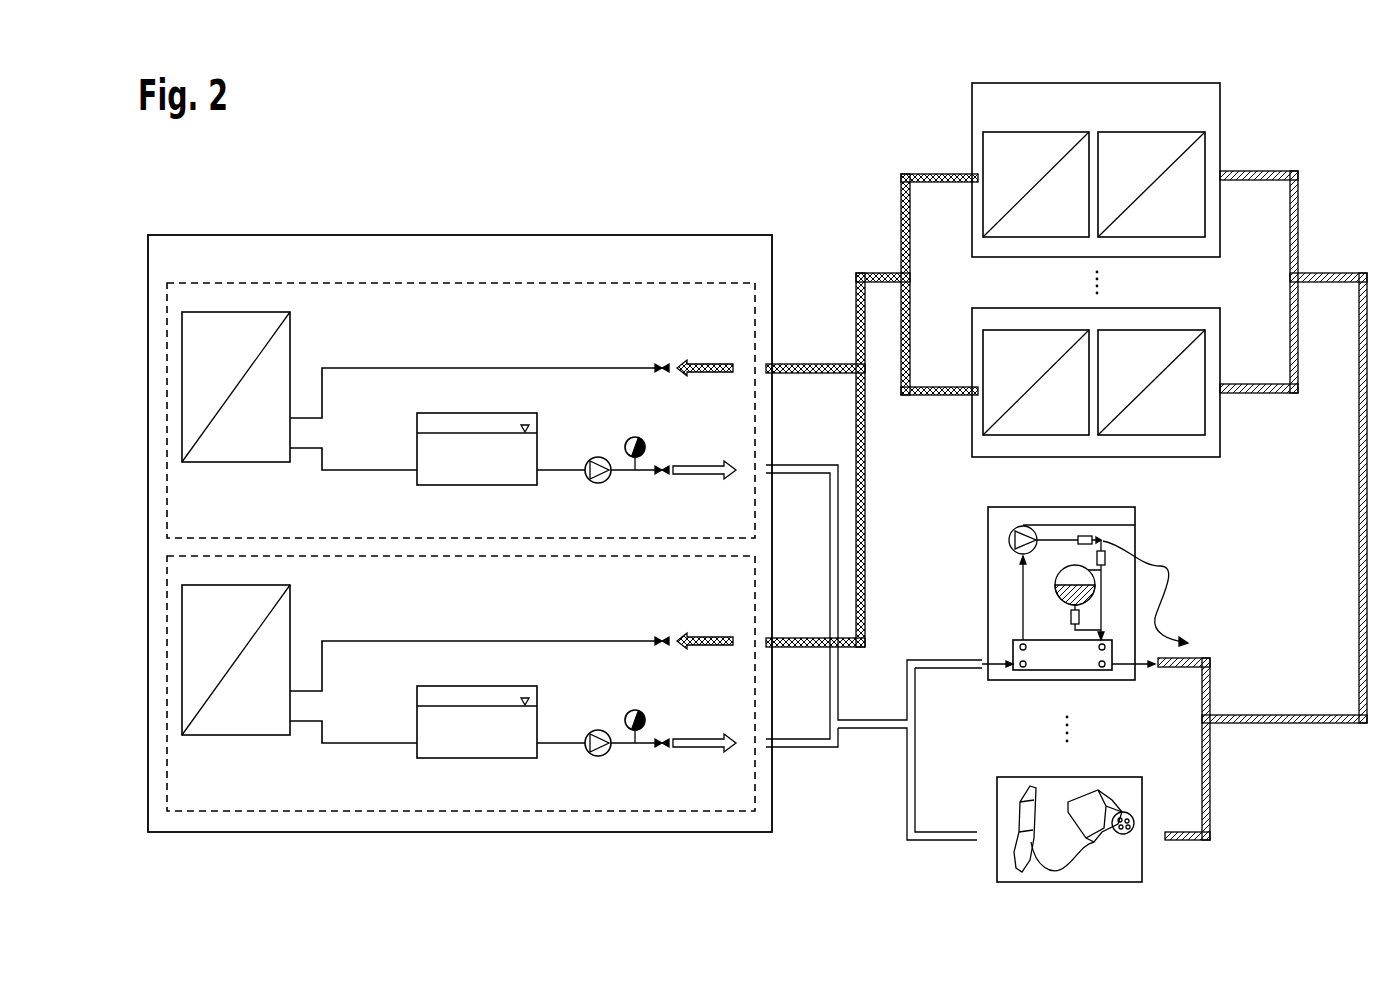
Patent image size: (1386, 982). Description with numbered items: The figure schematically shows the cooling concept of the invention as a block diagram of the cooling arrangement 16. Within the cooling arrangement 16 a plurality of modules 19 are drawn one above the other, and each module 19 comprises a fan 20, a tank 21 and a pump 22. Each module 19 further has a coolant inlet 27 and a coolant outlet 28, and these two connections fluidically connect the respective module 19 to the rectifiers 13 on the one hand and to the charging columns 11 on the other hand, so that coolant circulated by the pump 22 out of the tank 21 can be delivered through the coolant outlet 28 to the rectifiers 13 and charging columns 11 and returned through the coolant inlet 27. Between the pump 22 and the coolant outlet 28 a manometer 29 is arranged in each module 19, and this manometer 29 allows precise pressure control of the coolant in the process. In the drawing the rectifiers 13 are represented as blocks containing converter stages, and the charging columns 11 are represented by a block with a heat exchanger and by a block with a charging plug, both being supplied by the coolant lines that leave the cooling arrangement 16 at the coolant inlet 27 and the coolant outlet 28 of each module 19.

The charging column 11 is at (988, 522).
The rectifier 13 is at (972, 128).
The cooling arrangement 16 is at (170, 235).
The module 19 is at (167, 300).
The fan 20 is at (182, 357).
The tank 21 is at (417, 446).
The pump 22 is at (590, 461).
The coolant inlet 27 is at (712, 364).
The coolant outlet 28 is at (714, 466).
The manometer 29 is at (632, 437).